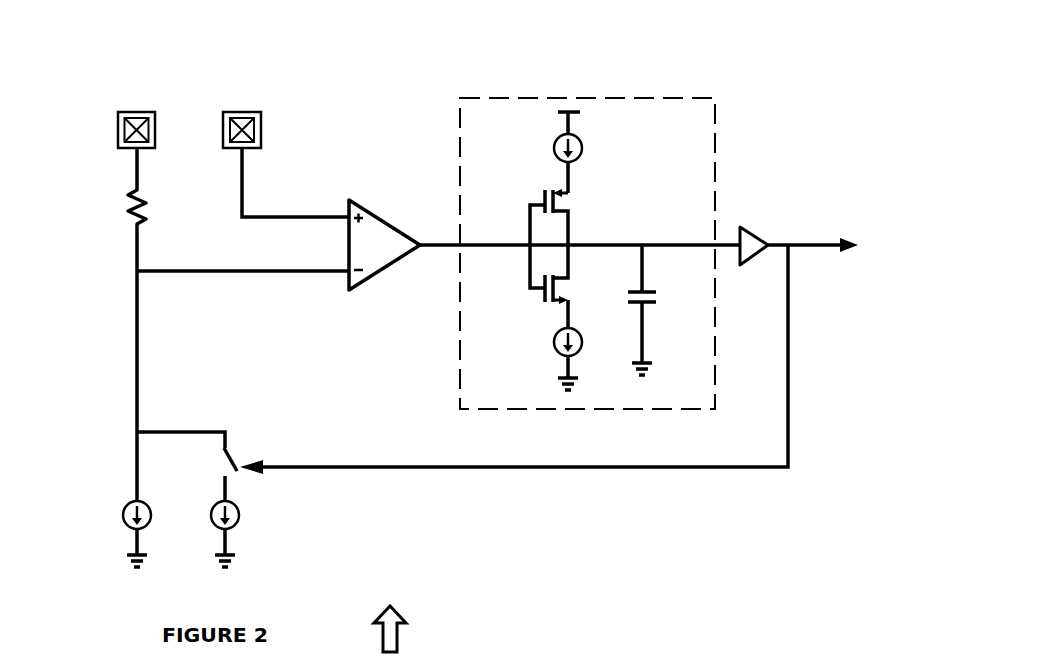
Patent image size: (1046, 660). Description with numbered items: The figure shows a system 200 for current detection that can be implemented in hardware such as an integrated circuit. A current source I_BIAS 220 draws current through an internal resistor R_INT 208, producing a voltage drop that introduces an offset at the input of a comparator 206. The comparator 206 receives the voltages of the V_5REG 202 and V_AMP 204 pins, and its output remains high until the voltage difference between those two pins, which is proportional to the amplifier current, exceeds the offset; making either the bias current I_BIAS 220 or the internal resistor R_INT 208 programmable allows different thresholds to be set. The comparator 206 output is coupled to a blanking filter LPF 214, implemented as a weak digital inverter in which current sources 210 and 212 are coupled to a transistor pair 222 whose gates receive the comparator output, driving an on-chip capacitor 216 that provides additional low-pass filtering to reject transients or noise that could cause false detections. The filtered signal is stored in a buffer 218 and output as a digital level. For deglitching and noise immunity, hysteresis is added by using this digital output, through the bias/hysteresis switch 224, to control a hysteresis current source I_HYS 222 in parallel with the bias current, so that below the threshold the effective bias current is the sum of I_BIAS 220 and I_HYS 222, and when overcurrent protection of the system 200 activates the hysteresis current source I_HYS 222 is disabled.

The system for current detection 200 is at (413, 629).
The V_5REG 202 is at (112, 121).
The V_AMP 204 is at (284, 136).
The comparator 206 is at (508, 216).
The internal resistor R_INT 208 is at (207, 343).
The current source 210 is at (592, 152).
The current source 212 is at (543, 359).
The blanking filter LPF 214 is at (587, 227).
The capacitor 216 is at (669, 310).
The buffer 218 is at (793, 231).
The current source I_BIAS 220 is at (108, 533).
The transistor pair / hysteresis current source I_HYS 222 is at (389, 378).
The bias/hysteresis switch 224 is at (462, 359).